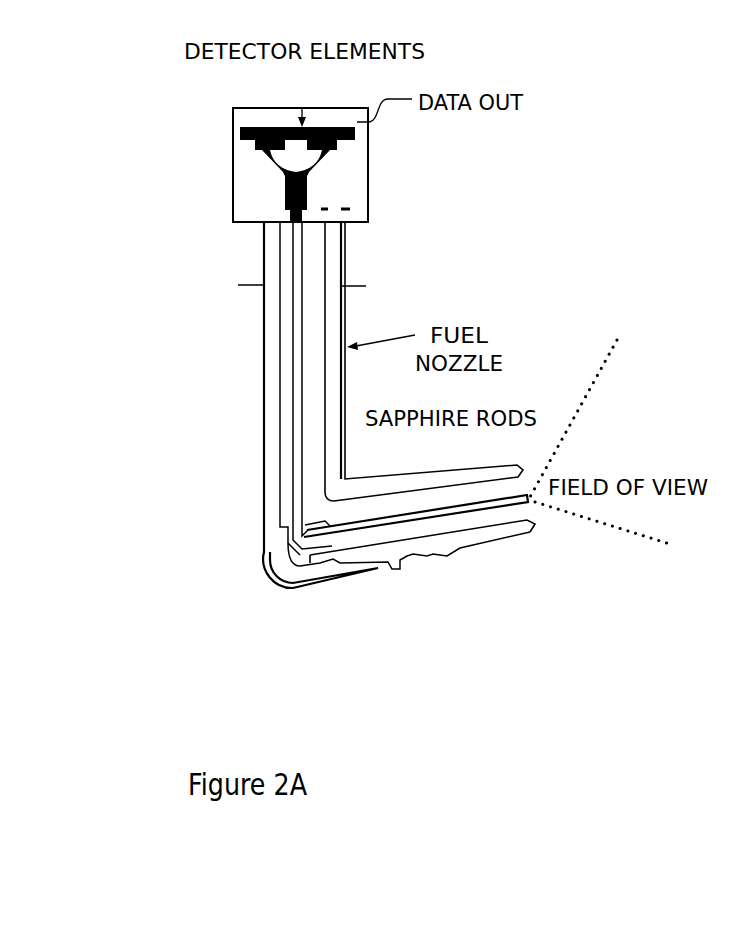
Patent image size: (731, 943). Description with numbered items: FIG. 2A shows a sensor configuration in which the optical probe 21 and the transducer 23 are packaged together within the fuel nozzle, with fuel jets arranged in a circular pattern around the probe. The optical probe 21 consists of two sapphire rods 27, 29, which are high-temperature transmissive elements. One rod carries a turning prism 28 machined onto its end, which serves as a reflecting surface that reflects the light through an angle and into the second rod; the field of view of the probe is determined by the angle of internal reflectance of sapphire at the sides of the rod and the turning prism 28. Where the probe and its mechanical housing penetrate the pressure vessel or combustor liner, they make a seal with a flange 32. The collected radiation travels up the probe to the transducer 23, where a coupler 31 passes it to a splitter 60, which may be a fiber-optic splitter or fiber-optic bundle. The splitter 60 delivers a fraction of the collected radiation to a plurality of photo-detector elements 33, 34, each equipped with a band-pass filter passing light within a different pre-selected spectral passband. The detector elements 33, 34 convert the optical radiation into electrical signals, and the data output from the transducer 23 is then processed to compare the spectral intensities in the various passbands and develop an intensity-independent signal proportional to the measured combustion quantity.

The optical probe 21 is at (250, 232).
The transducer 23 is at (214, 165).
The sapphire rod 27 is at (460, 498).
The turning prism 28 is at (281, 555).
The sapphire rod 29 is at (323, 488).
The coupler 31 is at (333, 200).
The flange 32 is at (380, 286).
The detector element 33 is at (267, 99).
The detector element 34 is at (335, 99).
The splitter 60 is at (345, 167).